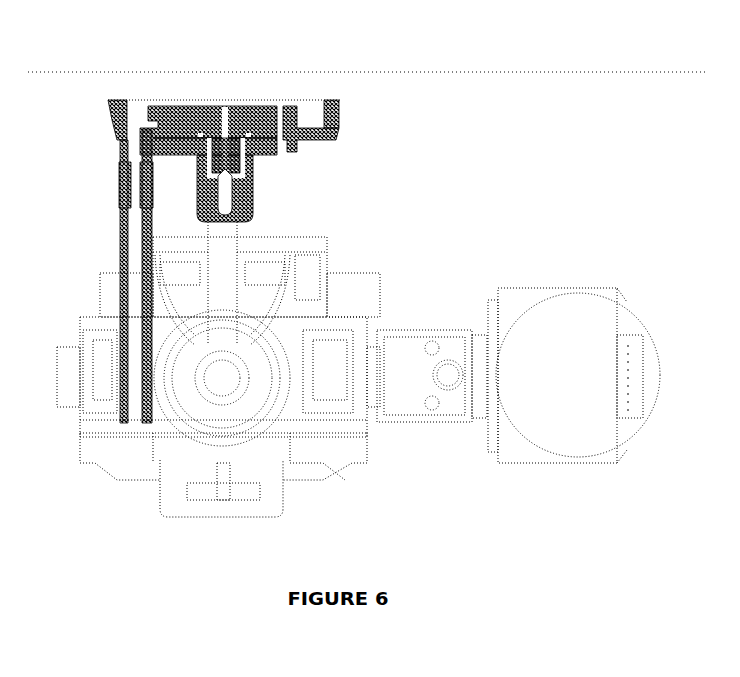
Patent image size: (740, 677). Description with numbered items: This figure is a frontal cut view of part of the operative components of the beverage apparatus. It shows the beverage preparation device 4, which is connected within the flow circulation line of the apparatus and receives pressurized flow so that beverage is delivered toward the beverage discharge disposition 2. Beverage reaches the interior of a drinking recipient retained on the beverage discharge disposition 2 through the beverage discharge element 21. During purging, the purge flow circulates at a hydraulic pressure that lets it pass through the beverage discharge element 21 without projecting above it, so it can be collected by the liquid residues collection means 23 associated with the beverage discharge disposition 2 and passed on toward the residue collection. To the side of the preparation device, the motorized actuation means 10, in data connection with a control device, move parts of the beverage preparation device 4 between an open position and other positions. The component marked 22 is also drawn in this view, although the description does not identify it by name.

The beverage discharge disposition 2 is at (368, 82).
The mounting bracket 22 is at (313, 124).
The beverage discharge element 21 is at (240, 191).
The liquid residues collection means 23 is at (111, 261).
The beverage preparation device 4 is at (270, 369).
The motorized actuation means 10 is at (574, 356).